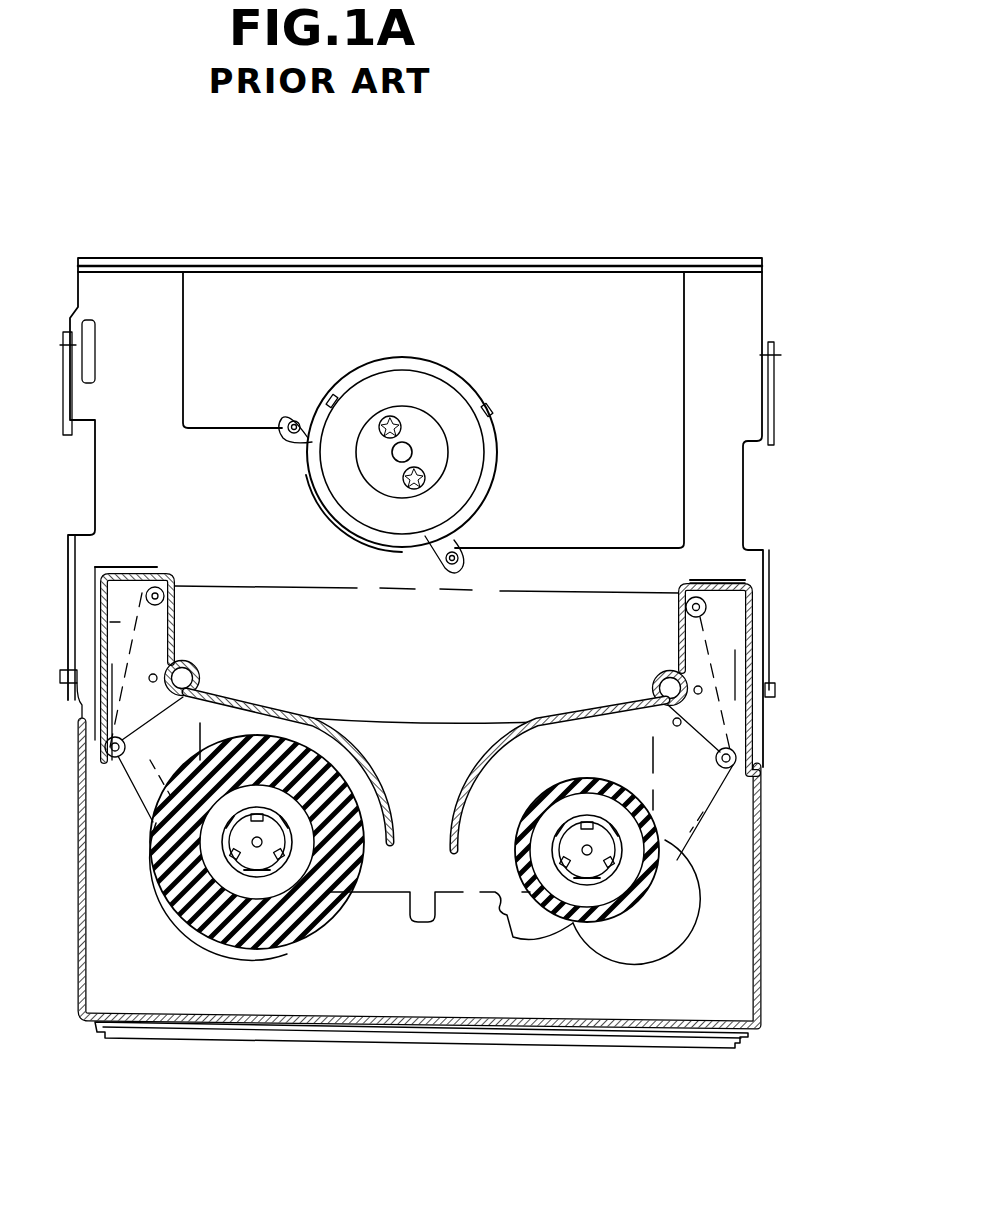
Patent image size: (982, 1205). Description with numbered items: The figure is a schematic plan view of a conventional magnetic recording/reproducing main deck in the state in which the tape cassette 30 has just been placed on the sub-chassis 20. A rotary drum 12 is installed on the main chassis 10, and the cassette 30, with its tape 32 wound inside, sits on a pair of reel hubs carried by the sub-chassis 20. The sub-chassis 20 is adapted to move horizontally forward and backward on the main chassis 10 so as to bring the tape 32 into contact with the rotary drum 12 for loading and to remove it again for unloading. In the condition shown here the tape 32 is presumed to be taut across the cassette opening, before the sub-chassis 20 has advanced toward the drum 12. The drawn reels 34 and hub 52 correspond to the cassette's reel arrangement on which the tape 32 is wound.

The main chassis 10 is at (556, 264).
The rotary drum 12 is at (400, 356).
The sub-chassis 20 is at (688, 1043).
The tape cassette 30 is at (762, 870).
The tape 32 is at (548, 593).
The tape reel 34 is at (224, 936).
The reel hub 52 is at (248, 900).